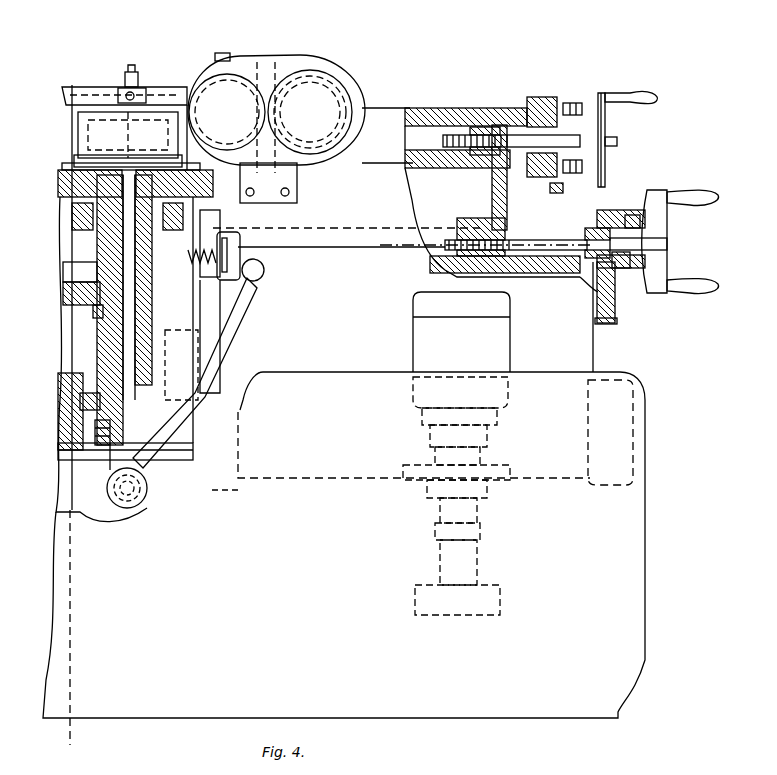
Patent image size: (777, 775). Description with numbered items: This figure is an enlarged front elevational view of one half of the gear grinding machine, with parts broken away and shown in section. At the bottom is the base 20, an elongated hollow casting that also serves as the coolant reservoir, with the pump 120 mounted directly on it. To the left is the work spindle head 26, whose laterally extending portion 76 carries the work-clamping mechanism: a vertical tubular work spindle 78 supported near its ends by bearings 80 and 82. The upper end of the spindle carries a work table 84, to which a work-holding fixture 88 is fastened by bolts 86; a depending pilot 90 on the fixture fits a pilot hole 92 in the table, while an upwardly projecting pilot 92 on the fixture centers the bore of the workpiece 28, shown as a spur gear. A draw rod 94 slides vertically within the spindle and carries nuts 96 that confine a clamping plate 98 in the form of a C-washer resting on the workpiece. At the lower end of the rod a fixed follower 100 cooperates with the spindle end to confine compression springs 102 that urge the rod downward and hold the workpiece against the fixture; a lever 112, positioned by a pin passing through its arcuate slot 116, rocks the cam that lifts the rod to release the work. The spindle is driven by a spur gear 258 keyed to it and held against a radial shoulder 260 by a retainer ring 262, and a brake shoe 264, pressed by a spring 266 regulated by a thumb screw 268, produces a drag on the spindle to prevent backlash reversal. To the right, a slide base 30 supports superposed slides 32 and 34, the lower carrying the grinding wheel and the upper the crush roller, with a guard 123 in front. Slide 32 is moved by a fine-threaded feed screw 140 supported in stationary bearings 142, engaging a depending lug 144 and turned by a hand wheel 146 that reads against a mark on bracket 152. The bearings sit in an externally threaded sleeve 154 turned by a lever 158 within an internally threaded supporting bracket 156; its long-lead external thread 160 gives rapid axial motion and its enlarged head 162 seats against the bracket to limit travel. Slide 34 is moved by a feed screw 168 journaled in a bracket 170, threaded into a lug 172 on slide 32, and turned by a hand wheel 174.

The base 20 is at (628, 572).
The work spindle head 26 is at (230, 225).
The workpiece 28 is at (160, 93).
The slide base 30 is at (563, 346).
The slide 32 is at (387, 215).
The slide 34 is at (390, 150).
The laterally extending portion 76 is at (215, 373).
The work spindle 78 is at (143, 337).
The bearing 80 is at (80, 393).
The bearing 82 is at (72, 220).
The work table 84 is at (67, 187).
The bolts 86 is at (83, 152).
The work-holding fixture 88 is at (83, 122).
The depending pilot 90 is at (67, 168).
The pilot 92 is at (113, 93).
The draw rod 94 is at (127, 330).
The nuts 96 is at (128, 72).
The clamping plate 98 is at (150, 87).
The follower 100 is at (100, 438).
The compression springs 102 is at (97, 420).
The lever 112 is at (243, 295).
The arcuate slot 116 is at (163, 485).
The pump 120 is at (413, 330).
The guard 123 is at (278, 80).
The feed screw 140 is at (535, 232).
The bearings 142 is at (628, 222).
The depending lug 144 is at (505, 240).
The hand wheel 146 is at (660, 197).
The bracket 152 is at (623, 210).
The sleeve 154 is at (610, 293).
The supporting bracket 156 is at (612, 318).
The lever 158 is at (640, 265).
The external thread 160 is at (598, 275).
The enlarged head 162 is at (617, 267).
The feed screw 168 is at (527, 130).
The bracket 170 is at (533, 97).
The lug 172 is at (463, 143).
The hand wheel 174 is at (603, 95).
The spur gear 258 is at (67, 288).
The radial shoulder 260 is at (100, 265).
The retainer ring 262 is at (93, 312).
The brake shoe 264 is at (258, 281).
The spring 266 is at (240, 260).
The thumb screw 268 is at (230, 243).